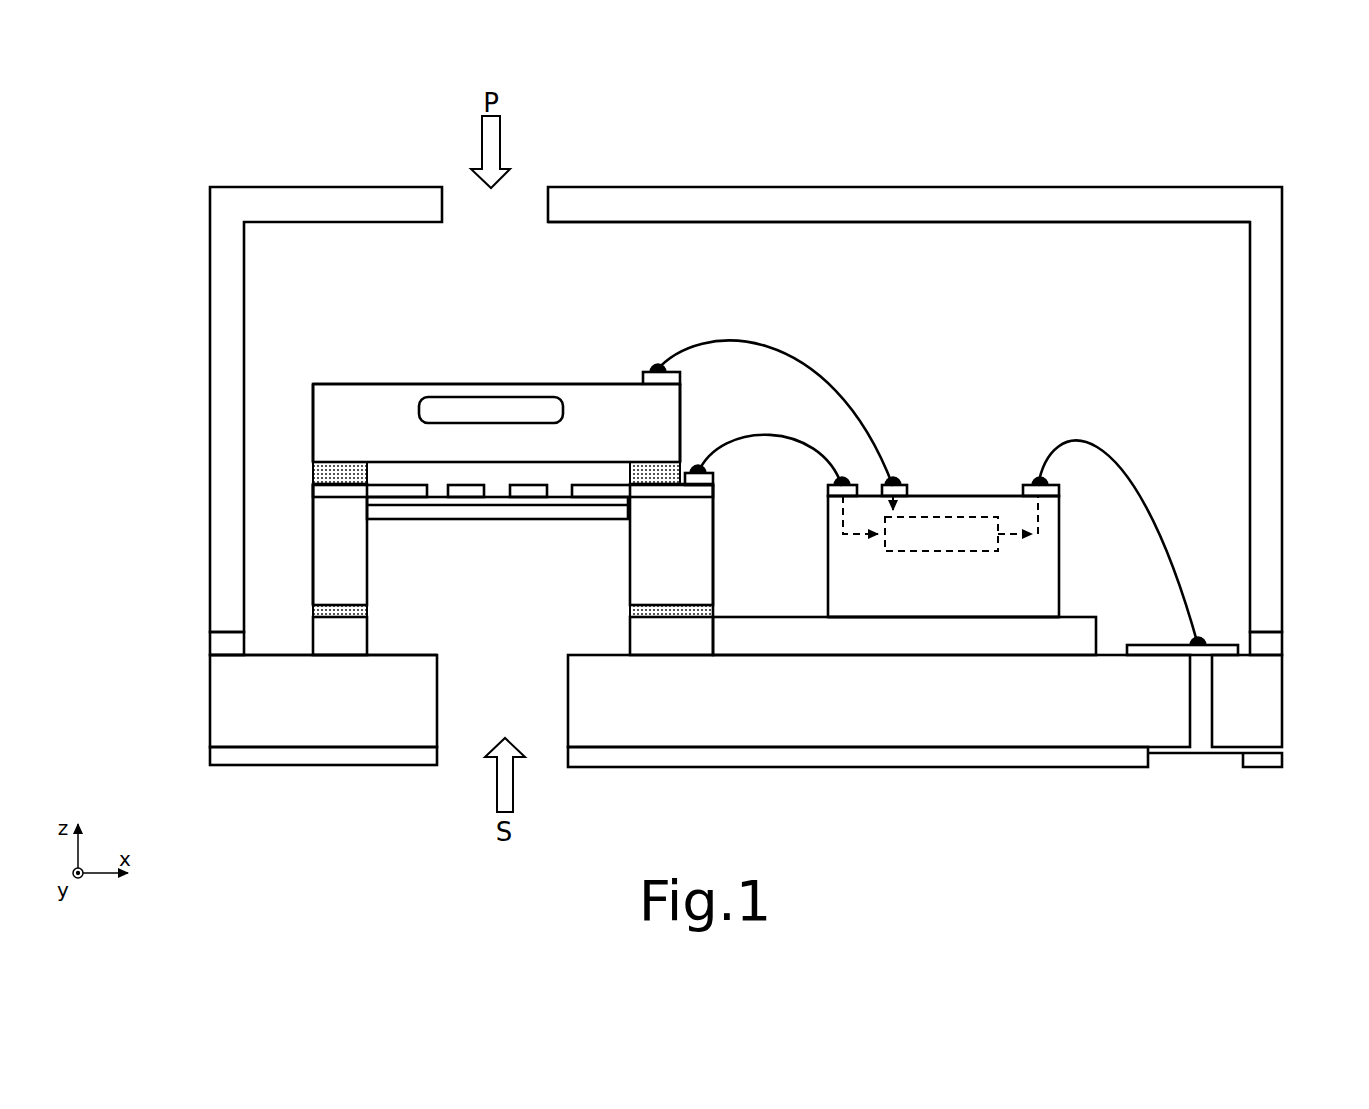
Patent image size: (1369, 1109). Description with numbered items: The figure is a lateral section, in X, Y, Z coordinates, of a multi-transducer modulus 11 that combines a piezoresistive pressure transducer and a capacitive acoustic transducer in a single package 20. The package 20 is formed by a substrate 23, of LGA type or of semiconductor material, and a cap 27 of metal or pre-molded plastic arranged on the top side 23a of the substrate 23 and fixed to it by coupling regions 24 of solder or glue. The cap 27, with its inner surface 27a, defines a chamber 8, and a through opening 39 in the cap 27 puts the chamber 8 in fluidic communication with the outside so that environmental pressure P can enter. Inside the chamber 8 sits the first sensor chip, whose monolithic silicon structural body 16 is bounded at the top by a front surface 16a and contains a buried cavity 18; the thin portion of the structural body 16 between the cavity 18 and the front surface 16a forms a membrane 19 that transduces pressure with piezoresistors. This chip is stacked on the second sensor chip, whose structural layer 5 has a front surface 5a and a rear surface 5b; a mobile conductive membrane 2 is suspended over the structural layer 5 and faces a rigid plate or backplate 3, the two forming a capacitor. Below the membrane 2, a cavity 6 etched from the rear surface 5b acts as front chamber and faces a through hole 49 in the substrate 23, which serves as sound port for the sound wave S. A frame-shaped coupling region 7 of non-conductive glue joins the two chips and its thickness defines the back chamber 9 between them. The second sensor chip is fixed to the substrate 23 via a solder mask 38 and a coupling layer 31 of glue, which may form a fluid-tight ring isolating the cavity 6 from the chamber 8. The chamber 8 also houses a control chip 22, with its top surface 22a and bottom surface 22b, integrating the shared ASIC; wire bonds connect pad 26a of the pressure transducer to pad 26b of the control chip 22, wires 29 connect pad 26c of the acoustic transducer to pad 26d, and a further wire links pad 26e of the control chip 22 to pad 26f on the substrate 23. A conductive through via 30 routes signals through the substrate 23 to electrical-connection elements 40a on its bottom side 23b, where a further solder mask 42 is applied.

The multi-transducer modulus 11 is at (176, 207).
The cap 27 is at (337, 200).
The through opening 39 is at (522, 193).
The chamber 8 is at (1194, 259).
The package 20 is at (207, 362).
The buried cavity 18 is at (438, 405).
The membrane 19 is at (500, 390).
The front surface 16a is at (590, 382).
The structural body 16 is at (325, 418).
The pad 26a is at (655, 370).
The inner surface of lid 27a is at (1052, 226).
The top surface of ASIC die 22a is at (1003, 492).
The conductive wire 29 is at (781, 438).
The pad 26b is at (893, 482).
The pad 26e is at (1025, 483).
The front surface 5a is at (326, 483).
The coupling region 7 is at (368, 464).
The back chamber 9 is at (486, 479).
The pad 26c is at (713, 481).
The pad 26d is at (826, 489).
The structural layer 5 is at (329, 556).
The cavity 6 is at (389, 571).
The membrane 2 is at (466, 510).
The rigid plate 3 is at (533, 492).
The top side 23a is at (270, 650).
The coupling region 24 is at (232, 645).
The rear surface 5b is at (354, 612).
The substrate 23 is at (228, 695).
The bottom side 23b is at (292, 752).
The coupling layer 31 is at (335, 614).
The through hole 49 is at (467, 762).
The solder mask 42 is at (606, 752).
The control chip 22 is at (826, 582).
The bottom surface of ASIC die 22b is at (950, 622).
The solder mask 38 is at (1032, 636).
The electrical-connection element 40a is at (1160, 752).
The bonding pad 26f is at (1238, 648).
The conductive through via 30 is at (1206, 710).